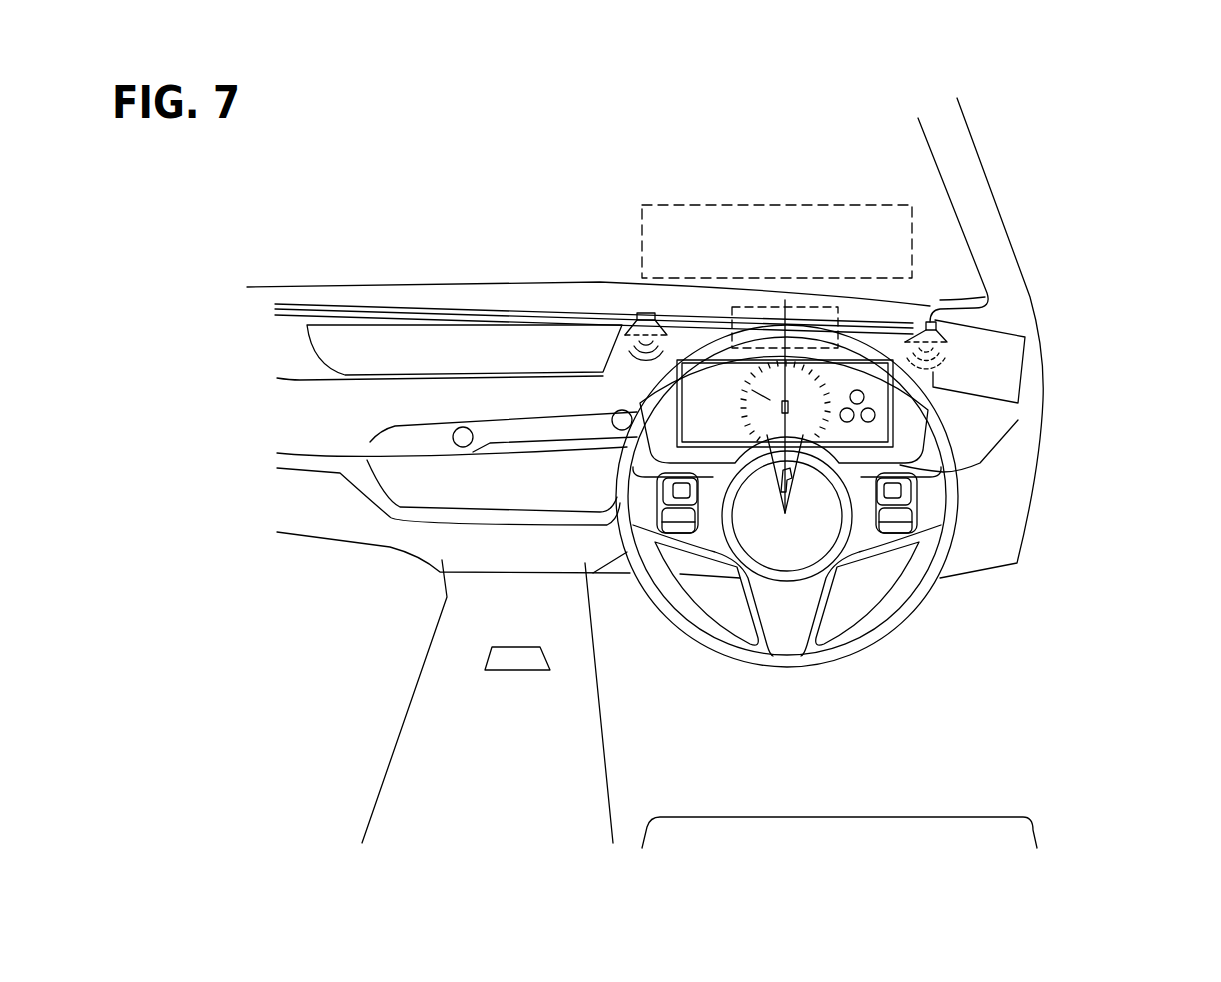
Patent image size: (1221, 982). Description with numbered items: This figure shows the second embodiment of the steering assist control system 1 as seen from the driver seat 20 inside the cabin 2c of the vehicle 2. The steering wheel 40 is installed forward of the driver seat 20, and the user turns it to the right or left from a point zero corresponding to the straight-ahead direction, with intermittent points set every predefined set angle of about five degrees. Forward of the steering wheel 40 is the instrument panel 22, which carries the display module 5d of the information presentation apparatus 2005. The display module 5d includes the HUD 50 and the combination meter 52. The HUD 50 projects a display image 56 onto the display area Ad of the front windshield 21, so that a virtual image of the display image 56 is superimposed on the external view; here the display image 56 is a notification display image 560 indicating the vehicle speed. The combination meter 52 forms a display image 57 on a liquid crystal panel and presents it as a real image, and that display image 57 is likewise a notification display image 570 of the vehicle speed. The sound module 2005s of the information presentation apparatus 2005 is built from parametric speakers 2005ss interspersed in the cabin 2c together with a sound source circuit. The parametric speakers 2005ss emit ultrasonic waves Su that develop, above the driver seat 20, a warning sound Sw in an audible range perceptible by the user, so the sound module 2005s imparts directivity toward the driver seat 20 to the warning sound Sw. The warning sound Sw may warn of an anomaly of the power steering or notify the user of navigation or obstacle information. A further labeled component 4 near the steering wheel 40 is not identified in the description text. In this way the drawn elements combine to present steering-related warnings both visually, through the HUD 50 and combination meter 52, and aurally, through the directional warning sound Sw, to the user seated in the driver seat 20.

The steering assist control system 1 is at (880, 496).
The vehicle 2 is at (965, 115).
The cabin 2c is at (690, 698).
The steering wheel 4 is at (840, 496).
The display module 5d is at (938, 297).
The driver seat 20 is at (1013, 828).
The front windshield 21 is at (920, 177).
The instrument panel 22 is at (712, 332).
The steering wheel 40 is at (912, 600).
The HUD 50 is at (750, 310).
The combination meter 52 is at (840, 378).
The display image 56 is at (670, 253).
The notification display image 560 is at (771, 212).
The display image 57 is at (948, 440).
The notification display image 570 is at (1022, 446).
The information presentation apparatus 2005 is at (1057, 313).
The sound module 2005s is at (950, 342).
The parametric speakers 2005ss is at (637, 313).
The display area Ad is at (912, 222).
The ultrasonic waves Su is at (580, 365).
The warning sound Sw is at (850, 852).